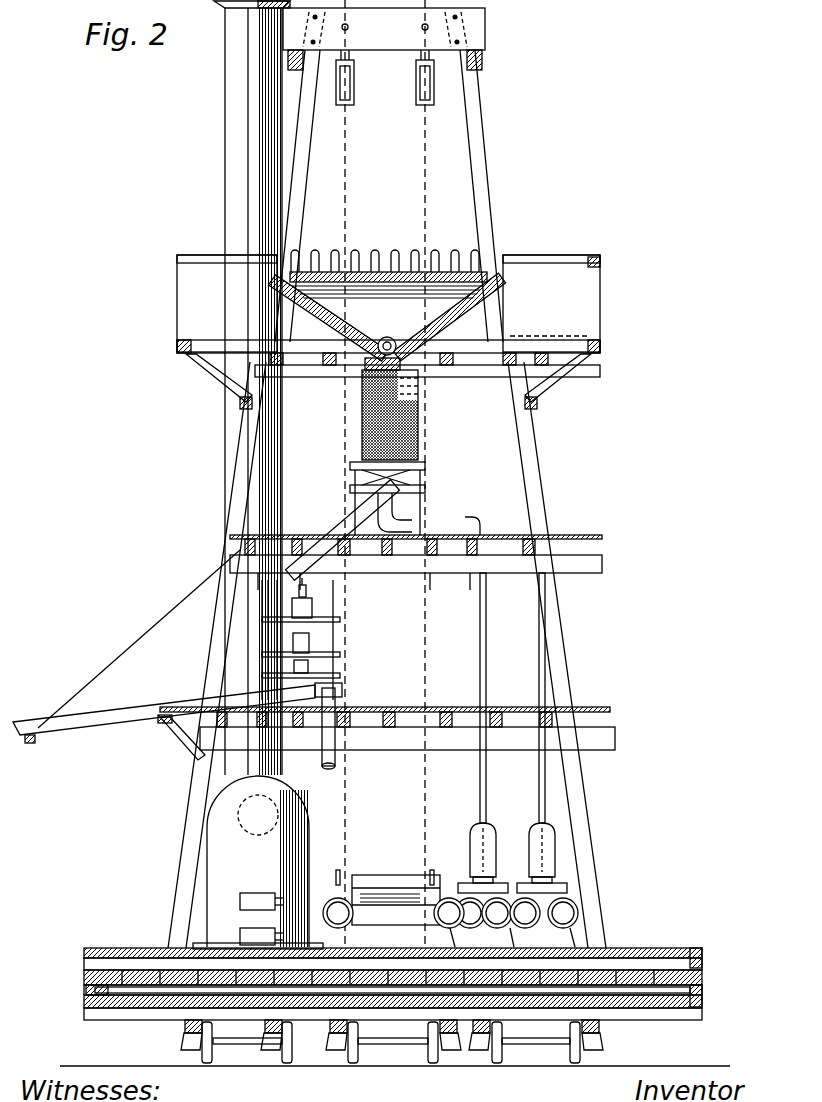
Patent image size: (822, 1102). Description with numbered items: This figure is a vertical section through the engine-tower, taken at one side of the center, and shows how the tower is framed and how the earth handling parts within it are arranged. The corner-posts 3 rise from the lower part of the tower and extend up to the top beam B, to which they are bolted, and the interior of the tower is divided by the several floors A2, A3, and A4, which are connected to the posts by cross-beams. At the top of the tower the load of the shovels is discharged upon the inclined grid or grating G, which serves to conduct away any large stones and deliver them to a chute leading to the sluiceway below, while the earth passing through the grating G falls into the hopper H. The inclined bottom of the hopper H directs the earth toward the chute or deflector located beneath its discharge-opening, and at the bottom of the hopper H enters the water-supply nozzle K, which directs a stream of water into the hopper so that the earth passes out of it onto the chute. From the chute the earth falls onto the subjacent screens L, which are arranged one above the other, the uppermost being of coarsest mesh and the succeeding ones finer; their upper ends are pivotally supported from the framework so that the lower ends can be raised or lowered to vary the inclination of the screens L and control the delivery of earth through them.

The top beam B is at (384, 39).
The inclined grid or grating G is at (372, 248).
The hopper H is at (387, 321).
The water-supply nozzle K is at (391, 338).
The floor A4 is at (388, 332).
The screens L is at (360, 405).
The floor A3 is at (495, 533).
The floor A2 is at (415, 712).
The corner-posts 3 is at (185, 880).